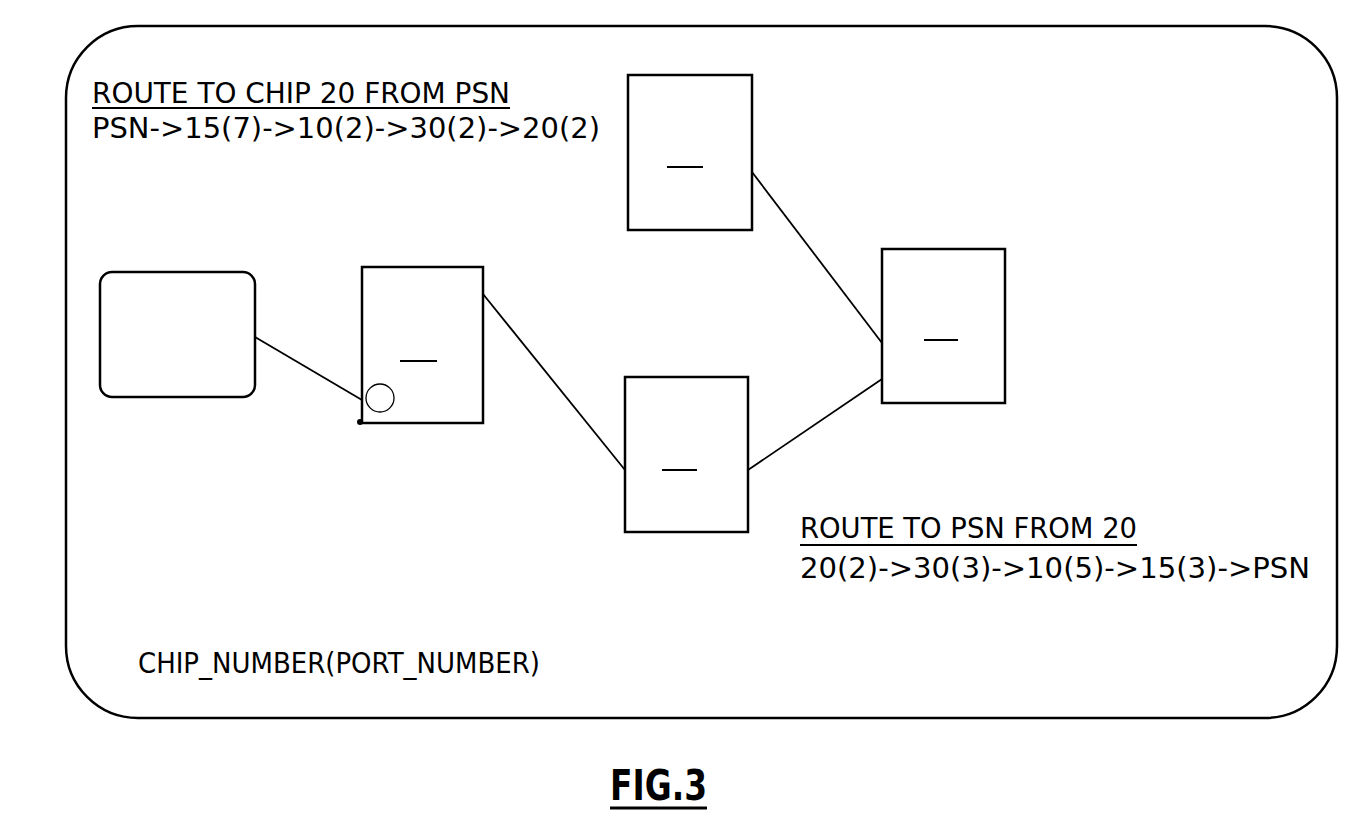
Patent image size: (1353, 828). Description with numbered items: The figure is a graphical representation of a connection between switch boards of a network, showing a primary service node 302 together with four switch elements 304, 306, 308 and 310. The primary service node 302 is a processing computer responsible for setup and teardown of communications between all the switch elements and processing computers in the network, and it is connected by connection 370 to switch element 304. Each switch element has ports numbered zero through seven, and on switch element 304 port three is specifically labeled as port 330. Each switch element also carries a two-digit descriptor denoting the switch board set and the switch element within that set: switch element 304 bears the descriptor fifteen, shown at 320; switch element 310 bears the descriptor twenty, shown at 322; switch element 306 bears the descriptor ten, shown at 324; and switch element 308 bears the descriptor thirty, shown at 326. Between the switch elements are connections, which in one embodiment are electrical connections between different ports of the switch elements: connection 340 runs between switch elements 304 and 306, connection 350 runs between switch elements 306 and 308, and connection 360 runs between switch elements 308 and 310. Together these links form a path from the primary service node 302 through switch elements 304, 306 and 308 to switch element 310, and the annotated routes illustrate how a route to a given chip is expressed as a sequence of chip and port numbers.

The primary service node 302 is at (183, 399).
The switch element 304 is at (415, 361).
The switch element 306 is at (699, 469).
The switch element 308 is at (977, 327).
The switch element 310 is at (703, 165).
The chip number 15 320 is at (420, 322).
The chip number 20 322 is at (686, 130).
The chip number 10 324 is at (683, 432).
The chip number 30 326 is at (938, 305).
The port 3 330 is at (378, 414).
The connection 340 is at (600, 445).
The connection 350 is at (808, 430).
The connection 360 is at (805, 230).
The connection 370 is at (290, 357).